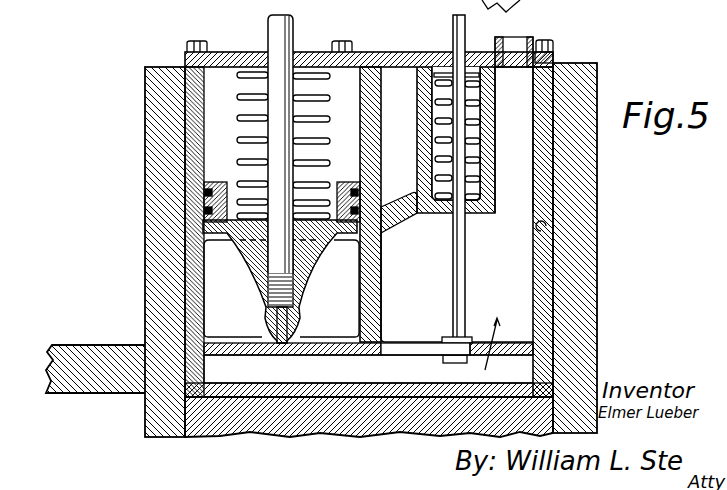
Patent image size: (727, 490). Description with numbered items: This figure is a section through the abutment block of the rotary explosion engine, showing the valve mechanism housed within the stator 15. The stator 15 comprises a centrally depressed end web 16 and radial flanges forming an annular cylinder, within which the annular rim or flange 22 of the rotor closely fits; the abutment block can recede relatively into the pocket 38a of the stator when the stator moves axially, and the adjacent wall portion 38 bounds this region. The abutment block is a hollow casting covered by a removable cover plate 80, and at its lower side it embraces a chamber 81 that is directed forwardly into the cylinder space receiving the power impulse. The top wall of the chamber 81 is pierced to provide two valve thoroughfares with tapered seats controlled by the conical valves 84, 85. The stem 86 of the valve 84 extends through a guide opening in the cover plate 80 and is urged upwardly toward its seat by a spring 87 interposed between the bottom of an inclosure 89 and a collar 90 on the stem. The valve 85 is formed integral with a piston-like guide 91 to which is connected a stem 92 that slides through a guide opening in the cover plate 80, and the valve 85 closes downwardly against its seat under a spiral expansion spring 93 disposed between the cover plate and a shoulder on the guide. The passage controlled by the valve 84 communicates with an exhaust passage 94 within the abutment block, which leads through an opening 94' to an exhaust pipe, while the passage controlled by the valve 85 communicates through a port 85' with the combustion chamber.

The stator 15 is at (592, 83).
The end member or web 16 is at (99, 388).
The annular rim or flange 22 is at (265, 433).
The inner wall 38 is at (530, 190).
The pocket 38a is at (546, 226).
The cover plate 80 is at (401, 50).
The chamber 81 is at (368, 369).
The conical valve 84 is at (417, 342).
The conical valve 85 is at (280, 294).
The port 85' is at (227, 288).
The stem 86 is at (466, 247).
The spring 87 is at (438, 126).
The inclosure 89 is at (488, 166).
The collar 90 is at (466, 72).
The piston-like guide 91 is at (215, 180).
The stem 92 is at (291, 19).
The spiral expansion spring 93 is at (241, 113).
The exhaust passage 94 is at (509, 301).
The bushing passage 94' is at (547, 39).